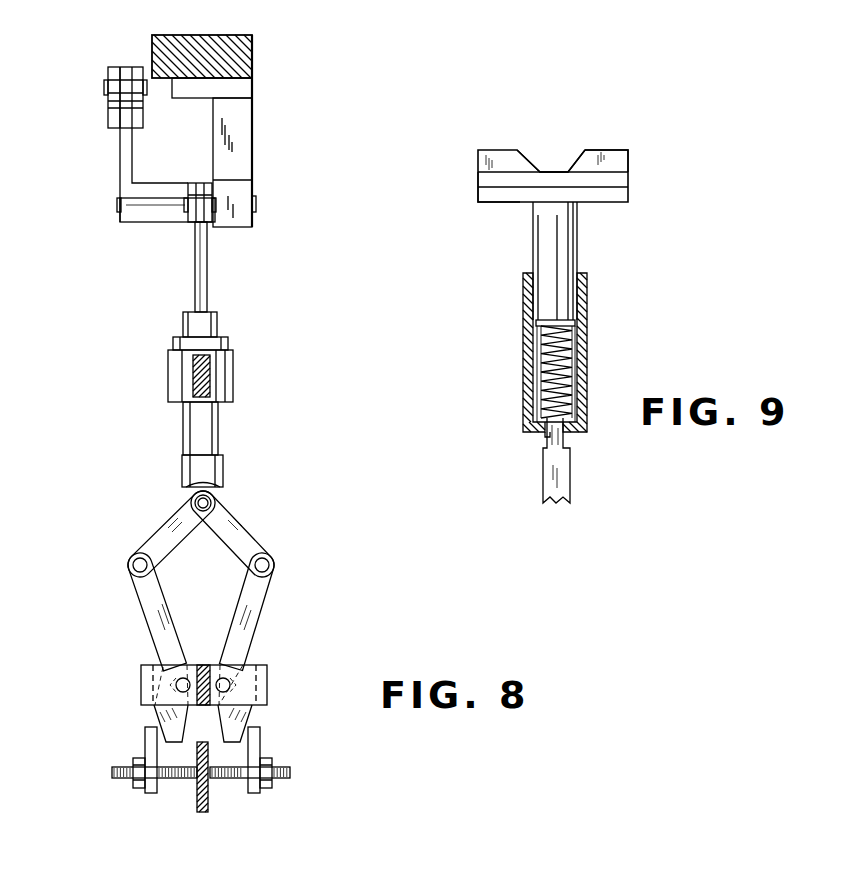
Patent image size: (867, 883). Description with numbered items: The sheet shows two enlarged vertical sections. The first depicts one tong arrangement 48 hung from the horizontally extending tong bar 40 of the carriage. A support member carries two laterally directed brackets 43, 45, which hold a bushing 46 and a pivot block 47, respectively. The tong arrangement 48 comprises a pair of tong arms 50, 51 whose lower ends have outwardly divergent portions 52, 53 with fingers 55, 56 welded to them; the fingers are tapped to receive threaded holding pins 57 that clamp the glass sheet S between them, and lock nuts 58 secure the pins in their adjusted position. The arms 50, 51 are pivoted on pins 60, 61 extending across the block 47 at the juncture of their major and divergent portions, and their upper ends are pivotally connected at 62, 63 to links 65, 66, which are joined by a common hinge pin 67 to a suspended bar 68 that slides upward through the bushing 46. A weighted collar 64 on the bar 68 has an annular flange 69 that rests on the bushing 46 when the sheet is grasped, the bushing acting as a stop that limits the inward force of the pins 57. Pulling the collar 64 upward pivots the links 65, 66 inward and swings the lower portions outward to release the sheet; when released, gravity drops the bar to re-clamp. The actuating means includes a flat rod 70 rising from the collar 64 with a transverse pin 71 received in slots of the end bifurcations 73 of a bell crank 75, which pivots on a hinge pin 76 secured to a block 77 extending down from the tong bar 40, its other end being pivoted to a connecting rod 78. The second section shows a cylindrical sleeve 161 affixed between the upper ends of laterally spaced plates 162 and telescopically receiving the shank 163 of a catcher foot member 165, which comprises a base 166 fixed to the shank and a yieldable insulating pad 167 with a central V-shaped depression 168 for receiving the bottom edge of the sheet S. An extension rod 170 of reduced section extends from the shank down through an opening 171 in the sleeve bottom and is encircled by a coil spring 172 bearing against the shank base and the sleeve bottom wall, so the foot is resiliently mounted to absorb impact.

In FIG. 8, the tong bar 40 is at (247, 57).
In FIG. 8, the block 77 is at (245, 118).
In FIG. 8, the connecting rod 78 is at (108, 70).
In FIG. 8, the bell crank 75 is at (123, 220).
In FIG. 8, the hinge pin 76 is at (118, 203).
In FIG. 8, the end bifurcations 73 is at (207, 187).
In FIG. 8, the pin 71 is at (217, 203).
In FIG. 8, the flat rod 70 is at (197, 243).
In FIG. 8, the weighted collar 64 is at (213, 312).
In FIG. 8, the annular flange 69 is at (177, 341).
In FIG. 8, the bushing 46 is at (235, 372).
In FIG. 8, the bracket 43 is at (193, 375).
In FIG. 8, the suspended bar 68 is at (192, 418).
In FIG. 8, the common hinge pin 67 is at (220, 488).
In FIG. 8, the link 66 is at (160, 534).
In FIG. 8, the link 65 is at (234, 527).
In FIG. 8, the pivotal connection 63 is at (132, 565).
In FIG. 8, the pivotal connection 62 is at (270, 563).
In FIG. 8, the tong arm 51 is at (148, 597).
In FIG. 8, the tong arm 50 is at (257, 609).
In FIG. 8, the tong arrangement 48 is at (314, 590).
In FIG. 8, the pivot block 47 is at (268, 675).
In FIG. 8, the bracket 45 is at (203, 664).
In FIG. 8, the pin 61 is at (181, 682).
In FIG. 8, the pin 60 is at (225, 683).
In FIG. 8, the divergent portion 53 is at (162, 716).
In FIG. 8, the divergent portion 52 is at (246, 718).
In FIG. 8, the finger 56 is at (150, 738).
In FIG. 8, the finger 55 is at (257, 744).
In FIG. 8, the threaded holding pin 57 is at (113, 770).
In FIG. 8, the lock nut 58 is at (138, 784).
In FIG. 8, the sheet S is at (208, 797).
In FIG. 9, the catcher foot member 165 is at (648, 183).
In FIG. 9, the V-shaped depression 168 is at (546, 170).
In FIG. 9, the pad 167 is at (615, 155).
In FIG. 9, the base 166 is at (486, 199).
In FIG. 9, the shank 163 is at (571, 239).
In FIG. 9, the cylindrical sleeve 161 is at (528, 365).
In FIG. 9, the coil spring 172 is at (546, 333).
In FIG. 9, the extension rod 170 is at (560, 370).
In FIG. 9, the opening 171 is at (547, 440).
In FIG. 9, the plates 162 is at (566, 468).